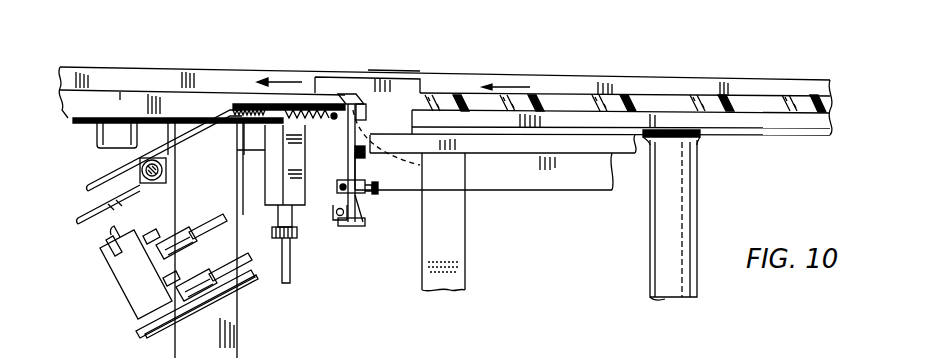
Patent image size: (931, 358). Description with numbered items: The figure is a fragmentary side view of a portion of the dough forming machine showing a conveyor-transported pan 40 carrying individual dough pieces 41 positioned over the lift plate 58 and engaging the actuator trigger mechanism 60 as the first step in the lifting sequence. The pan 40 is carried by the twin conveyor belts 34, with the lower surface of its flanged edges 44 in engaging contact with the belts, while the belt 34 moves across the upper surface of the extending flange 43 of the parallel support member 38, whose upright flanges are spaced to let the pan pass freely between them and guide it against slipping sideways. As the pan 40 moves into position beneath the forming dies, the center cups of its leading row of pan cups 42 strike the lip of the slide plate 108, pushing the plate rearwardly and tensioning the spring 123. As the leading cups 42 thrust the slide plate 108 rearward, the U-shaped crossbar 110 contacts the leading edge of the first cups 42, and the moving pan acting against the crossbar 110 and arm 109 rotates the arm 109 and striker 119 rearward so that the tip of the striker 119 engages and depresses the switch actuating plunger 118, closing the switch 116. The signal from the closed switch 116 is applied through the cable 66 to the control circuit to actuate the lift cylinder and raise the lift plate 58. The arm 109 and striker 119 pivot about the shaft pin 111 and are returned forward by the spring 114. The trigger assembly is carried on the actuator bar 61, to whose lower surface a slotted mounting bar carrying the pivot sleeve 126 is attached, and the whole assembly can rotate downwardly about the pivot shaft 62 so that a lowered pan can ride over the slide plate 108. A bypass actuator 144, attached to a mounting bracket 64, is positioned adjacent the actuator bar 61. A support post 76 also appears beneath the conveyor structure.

The conveyor belts 34 is at (156, 92).
The parallel support members 38 is at (116, 67).
The pan 40 is at (760, 81).
The dough pieces 41 is at (650, 97).
The pan cups 42 is at (400, 100).
The extending flange 43 is at (75, 123).
The flanged edges 44 is at (327, 78).
The lift plate 58 is at (800, 130).
The actuator trigger mechanism 60 is at (216, 92).
The actuator bar 61 is at (199, 130).
The pivot shaft 62 is at (167, 174).
The mounting bracket 64 is at (238, 323).
The cable 66 is at (291, 268).
The support post 76 is at (697, 221).
The slide plate 108 is at (249, 104).
The arm 109 is at (363, 205).
The U-shaped crossbar 110 is at (347, 128).
The shaft pin 111 is at (335, 220).
The spring 114 is at (357, 228).
The switch 116 is at (266, 175).
The switch actuating plunger 118 is at (353, 153).
The striker 119 is at (362, 152).
The spring 123 is at (302, 108).
The pivot sleeve 126 is at (152, 186).
The bypass actuator 144 is at (135, 283).